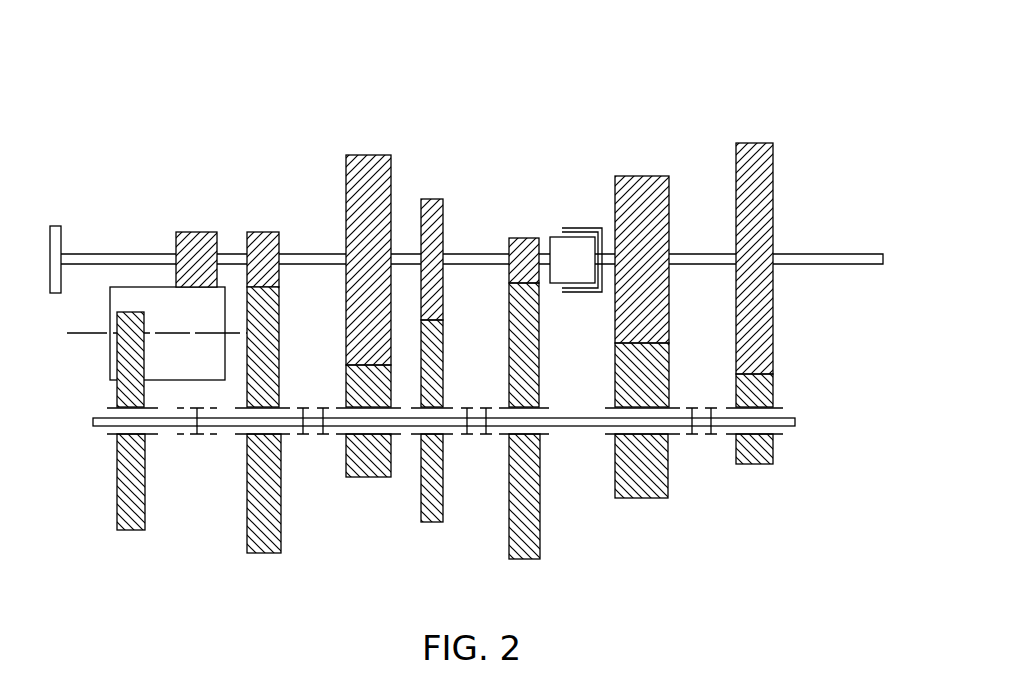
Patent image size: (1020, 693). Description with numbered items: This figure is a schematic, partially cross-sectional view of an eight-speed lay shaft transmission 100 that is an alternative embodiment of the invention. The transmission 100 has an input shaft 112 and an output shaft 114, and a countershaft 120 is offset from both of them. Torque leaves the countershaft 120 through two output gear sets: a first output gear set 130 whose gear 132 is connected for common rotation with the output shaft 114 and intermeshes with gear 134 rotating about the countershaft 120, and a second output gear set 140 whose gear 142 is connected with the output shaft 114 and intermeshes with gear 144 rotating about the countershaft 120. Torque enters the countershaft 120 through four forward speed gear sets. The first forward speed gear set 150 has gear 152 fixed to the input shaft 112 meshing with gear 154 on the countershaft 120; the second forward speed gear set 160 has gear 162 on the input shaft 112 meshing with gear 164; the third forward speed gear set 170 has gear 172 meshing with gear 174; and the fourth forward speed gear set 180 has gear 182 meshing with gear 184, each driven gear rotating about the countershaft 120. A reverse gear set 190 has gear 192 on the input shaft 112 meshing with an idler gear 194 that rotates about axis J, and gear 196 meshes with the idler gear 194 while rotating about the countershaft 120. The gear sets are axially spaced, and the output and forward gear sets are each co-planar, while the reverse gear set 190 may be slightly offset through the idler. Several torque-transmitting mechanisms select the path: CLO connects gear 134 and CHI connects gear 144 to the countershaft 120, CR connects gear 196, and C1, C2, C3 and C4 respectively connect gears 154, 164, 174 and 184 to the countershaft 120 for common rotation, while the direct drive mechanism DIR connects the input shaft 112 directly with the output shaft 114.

The transmission 100 is at (133, 150).
The input shaft 112 is at (108, 254).
The output shaft 114 is at (820, 253).
The countershaft 120 is at (105, 430).
The first output gear set 130 is at (760, 281).
The gear 132 is at (773, 200).
The gear 134 is at (773, 383).
The second output gear set 140 is at (636, 318).
The gear 142 is at (669, 200).
The gear 144 is at (615, 370).
The first forward speed gear set 150 is at (541, 395).
The gear 152 is at (509, 240).
The gear 154 is at (540, 327).
The second forward speed gear set 160 is at (267, 397).
The gear 162 is at (279, 240).
The gear 164 is at (279, 360).
The third forward speed gear set 170 is at (452, 378).
The gear 172 is at (443, 213).
The gear 174 is at (444, 358).
The fourth forward speed gear set 180 is at (379, 345).
The gear 182 is at (392, 173).
The gear 184 is at (392, 462).
The reverse gear set 190 is at (153, 334).
The gear 192 is at (176, 240).
The idler gear 194 is at (196, 326).
The gear 196 is at (117, 500).
The axis J is at (90, 335).
The reverse torque-transmitting mechanism CR is at (197, 436).
The torque-transmitting mechanism C1 is at (487, 442).
The torque-transmitting mechanism C2 is at (299, 442).
The torque-transmitting mechanism C3 is at (464, 442).
The torque-transmitting mechanism C4 is at (322, 442).
The second output torque-transmitting mechanism CHI is at (691, 402).
The first output torque-transmitting mechanism CLO is at (711, 402).
The direct drive torque-transmitting mechanism DIR is at (552, 222).